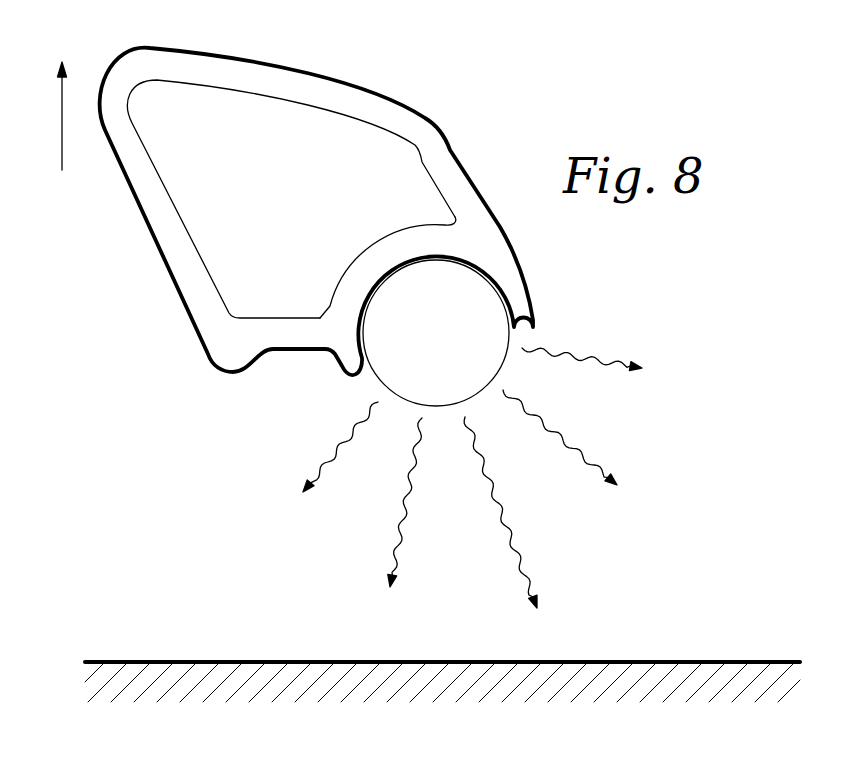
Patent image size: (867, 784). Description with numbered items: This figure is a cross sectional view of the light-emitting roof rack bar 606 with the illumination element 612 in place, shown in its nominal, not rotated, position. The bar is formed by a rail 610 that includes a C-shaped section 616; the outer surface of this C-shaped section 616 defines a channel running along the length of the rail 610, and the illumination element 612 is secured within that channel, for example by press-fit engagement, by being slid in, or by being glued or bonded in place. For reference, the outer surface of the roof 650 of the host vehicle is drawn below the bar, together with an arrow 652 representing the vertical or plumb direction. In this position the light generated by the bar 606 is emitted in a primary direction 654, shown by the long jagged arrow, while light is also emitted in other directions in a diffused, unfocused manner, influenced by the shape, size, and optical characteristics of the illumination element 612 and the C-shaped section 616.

The light-emitting roof rack bar 606 is at (265, 46).
The rail 610 is at (343, 83).
The illumination element 612 is at (430, 376).
The C-shaped section 616 is at (383, 247).
The roof 650 is at (703, 662).
The arrow 652 is at (62, 133).
The primary direction 654 is at (493, 488).